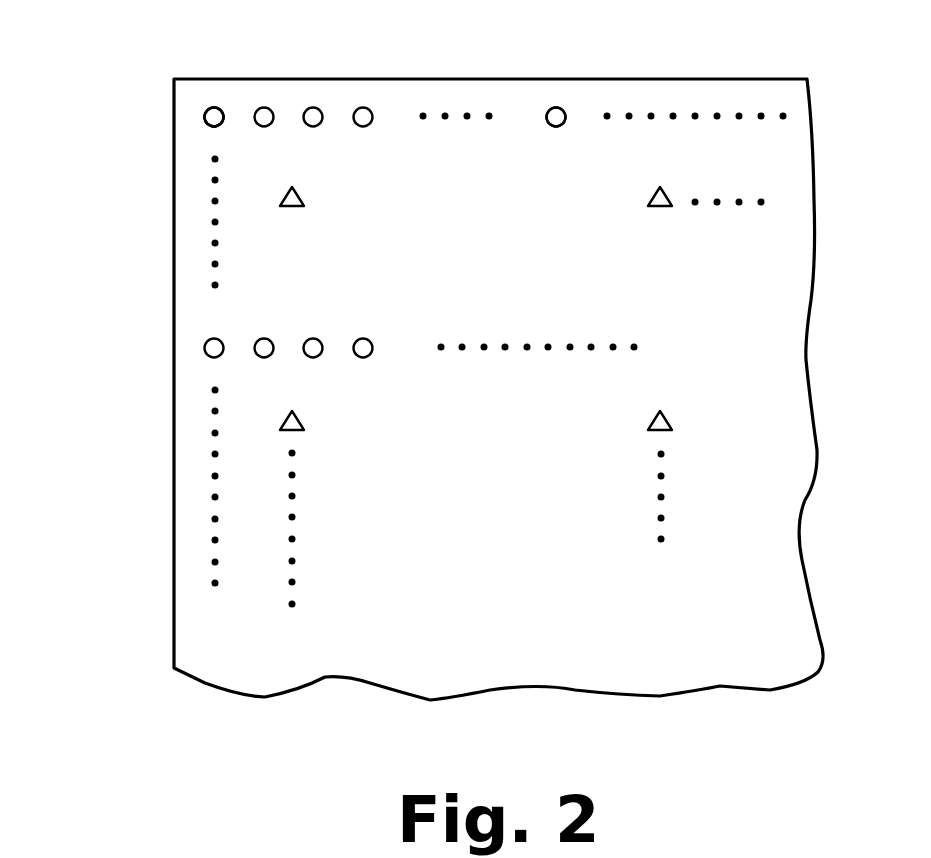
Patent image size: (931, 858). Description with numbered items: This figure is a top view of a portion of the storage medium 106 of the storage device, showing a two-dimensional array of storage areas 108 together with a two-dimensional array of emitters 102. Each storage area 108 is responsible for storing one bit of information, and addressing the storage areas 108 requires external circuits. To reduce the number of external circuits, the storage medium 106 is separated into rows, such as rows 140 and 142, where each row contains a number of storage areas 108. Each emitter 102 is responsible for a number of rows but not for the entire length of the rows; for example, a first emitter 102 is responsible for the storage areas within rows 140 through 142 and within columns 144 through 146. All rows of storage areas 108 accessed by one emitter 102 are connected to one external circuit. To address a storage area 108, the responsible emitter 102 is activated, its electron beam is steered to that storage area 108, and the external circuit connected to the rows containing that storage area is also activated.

The field emitter 102 is at (303, 198).
The storage medium 106 is at (710, 79).
The storage area 108 is at (217, 104).
The row 140 is at (202, 117).
The row 142 is at (202, 348).
The column 144 is at (206, 109).
The column 146 is at (557, 106).